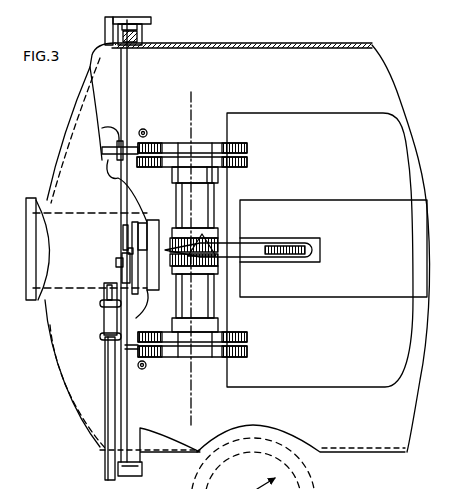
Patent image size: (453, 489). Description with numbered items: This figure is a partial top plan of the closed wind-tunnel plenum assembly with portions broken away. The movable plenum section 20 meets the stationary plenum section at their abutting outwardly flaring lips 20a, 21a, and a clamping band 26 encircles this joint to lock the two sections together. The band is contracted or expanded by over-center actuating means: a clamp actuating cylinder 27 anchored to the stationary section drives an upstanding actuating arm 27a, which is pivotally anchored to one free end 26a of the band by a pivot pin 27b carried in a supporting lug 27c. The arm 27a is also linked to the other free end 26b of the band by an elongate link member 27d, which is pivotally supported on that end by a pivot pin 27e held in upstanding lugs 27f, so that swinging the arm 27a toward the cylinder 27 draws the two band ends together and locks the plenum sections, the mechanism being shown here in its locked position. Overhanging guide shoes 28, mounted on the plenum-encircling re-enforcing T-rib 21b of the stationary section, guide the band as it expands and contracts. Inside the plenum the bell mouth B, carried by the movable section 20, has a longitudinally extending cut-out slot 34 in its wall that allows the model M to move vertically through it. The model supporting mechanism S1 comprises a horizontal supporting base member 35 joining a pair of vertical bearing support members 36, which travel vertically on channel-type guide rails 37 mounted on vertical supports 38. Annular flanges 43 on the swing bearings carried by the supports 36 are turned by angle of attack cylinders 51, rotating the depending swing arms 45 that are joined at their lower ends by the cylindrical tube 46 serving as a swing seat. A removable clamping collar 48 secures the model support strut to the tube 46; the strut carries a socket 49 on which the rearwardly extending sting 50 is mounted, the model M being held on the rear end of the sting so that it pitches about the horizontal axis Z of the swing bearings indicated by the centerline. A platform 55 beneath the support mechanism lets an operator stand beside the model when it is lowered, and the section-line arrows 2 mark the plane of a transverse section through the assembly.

The movable plenum section 20 is at (242, 45).
The outwardly flaring lip 20a is at (131, 44).
The outwardly flaring lip 21a is at (126, 47).
The re-enforcing T-rib 21b is at (105, 26).
The clamping band 26 is at (143, 33).
The free end of clamping band 26a is at (144, 274).
The free end of clamping band 26b is at (121, 198).
The clamp actuating cylinder 27 is at (103, 320).
The actuating arm 27a is at (115, 277).
The pivot pin 27b is at (128, 252).
The supporting lug 27c is at (118, 263).
The elongate link member 27d is at (134, 308).
The pivot pin 27e is at (142, 235).
The upstanding lugs 27f is at (122, 240).
The guide shoes 28 is at (141, 20).
The cut-out slots 34 is at (318, 262).
The supporting base member 35 is at (164, 189).
The bearing support members 36 is at (200, 147).
The guide rails 37 is at (118, 135).
The vertical supports 38 is at (102, 150).
The annular flange 43 is at (184, 142).
The swing arm 45 is at (248, 155).
The cylindrical tube 46 is at (216, 306).
The clamping collar 48 is at (201, 268).
The socket 49 is at (282, 256).
The sting 50 is at (255, 243).
The angle of attack cylinders 51 is at (156, 116).
The platform 55 is at (354, 388).
The bell mouth B is at (297, 198).
The model M is at (200, 234).
The model supporting mechanism S1 is at (276, 324).
The axis Z is at (191, 256).
The section line 2 is at (360, 25).